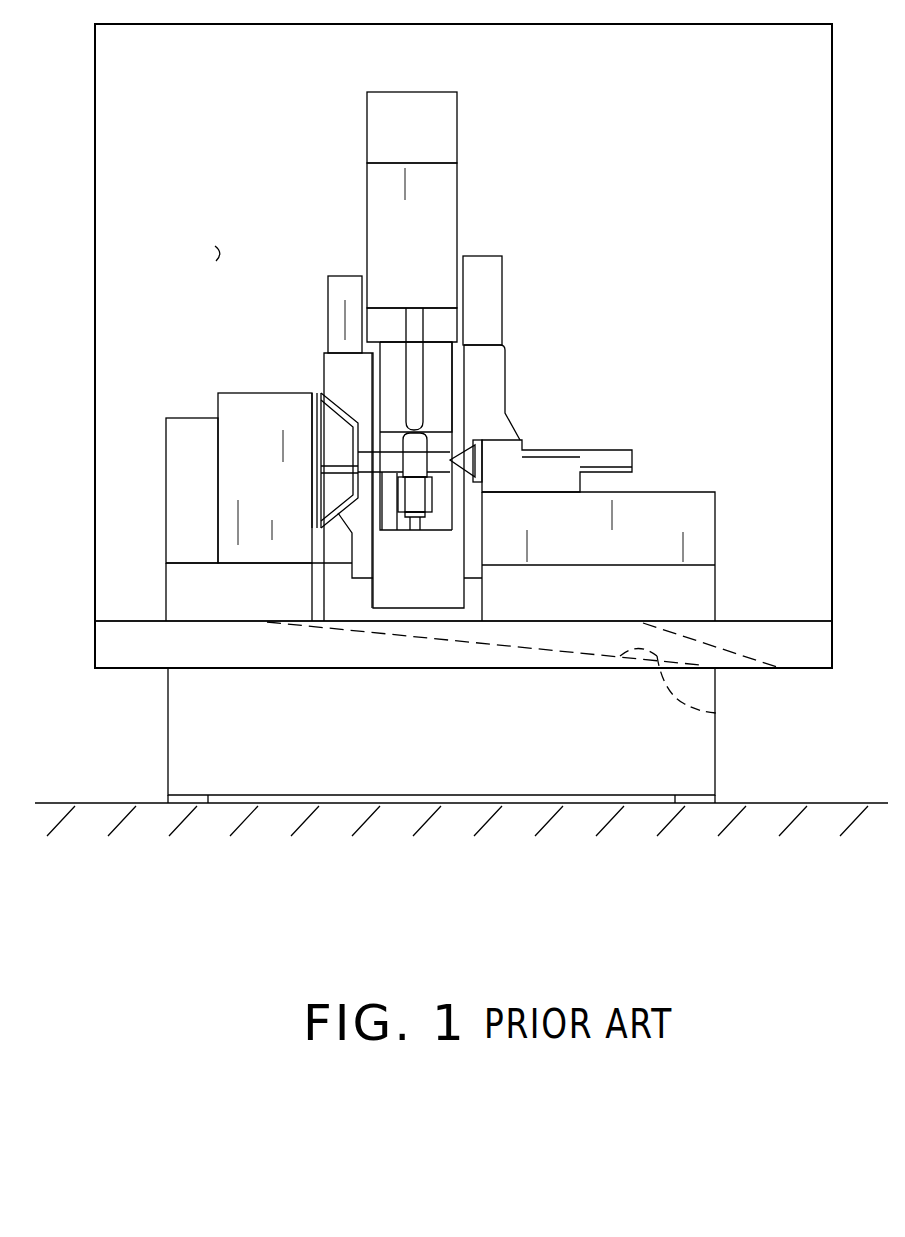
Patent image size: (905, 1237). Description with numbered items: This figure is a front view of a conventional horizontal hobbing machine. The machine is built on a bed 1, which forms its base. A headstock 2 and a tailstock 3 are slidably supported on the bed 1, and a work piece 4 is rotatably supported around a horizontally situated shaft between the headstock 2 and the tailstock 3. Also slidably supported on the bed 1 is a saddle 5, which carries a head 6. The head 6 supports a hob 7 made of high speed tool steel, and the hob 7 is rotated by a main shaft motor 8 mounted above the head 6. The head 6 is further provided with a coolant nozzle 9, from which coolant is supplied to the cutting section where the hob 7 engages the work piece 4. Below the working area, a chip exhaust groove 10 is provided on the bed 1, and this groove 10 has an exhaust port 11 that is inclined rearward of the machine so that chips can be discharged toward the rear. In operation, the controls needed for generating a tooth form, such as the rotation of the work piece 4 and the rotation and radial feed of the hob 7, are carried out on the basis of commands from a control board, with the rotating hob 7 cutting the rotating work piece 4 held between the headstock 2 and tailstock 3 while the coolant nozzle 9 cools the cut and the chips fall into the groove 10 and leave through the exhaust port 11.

The bed 1 is at (147, 641).
The headstock 2 is at (270, 423).
The tailstock 3 is at (562, 474).
The work piece 4 is at (413, 457).
The saddle 5 is at (483, 378).
The head 6 is at (433, 360).
The hob 7 is at (420, 502).
The main shaft motor 8 is at (438, 126).
The coolant nozzle 9 is at (415, 318).
The chip exhaust groove 10 is at (716, 713).
The exhaust port 11 is at (760, 668).